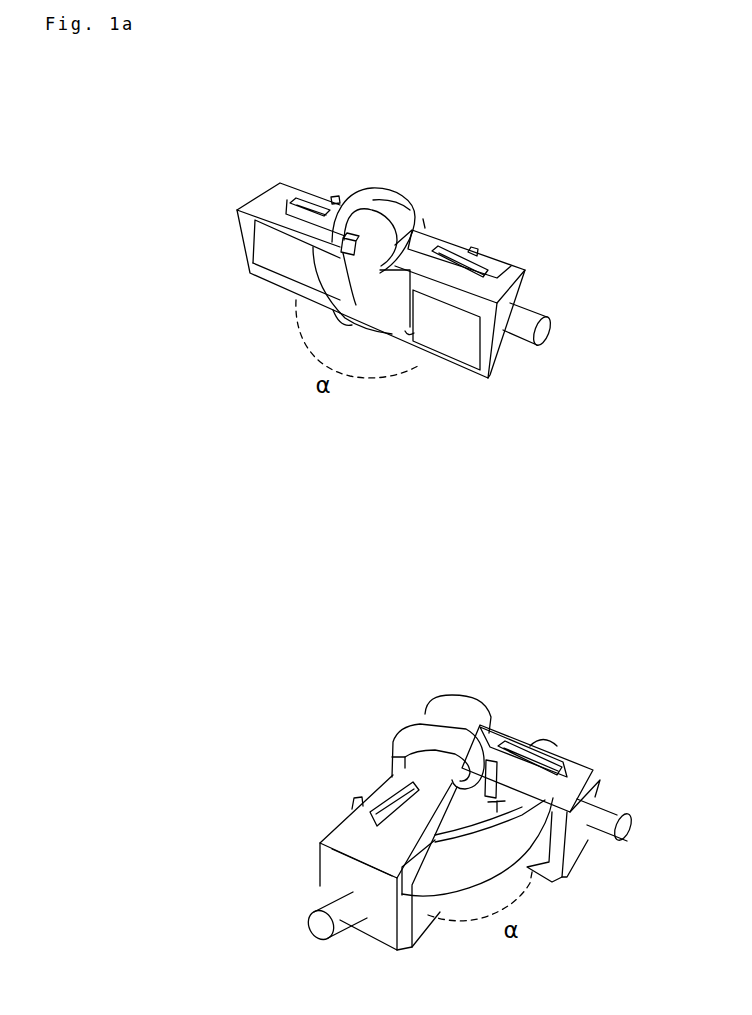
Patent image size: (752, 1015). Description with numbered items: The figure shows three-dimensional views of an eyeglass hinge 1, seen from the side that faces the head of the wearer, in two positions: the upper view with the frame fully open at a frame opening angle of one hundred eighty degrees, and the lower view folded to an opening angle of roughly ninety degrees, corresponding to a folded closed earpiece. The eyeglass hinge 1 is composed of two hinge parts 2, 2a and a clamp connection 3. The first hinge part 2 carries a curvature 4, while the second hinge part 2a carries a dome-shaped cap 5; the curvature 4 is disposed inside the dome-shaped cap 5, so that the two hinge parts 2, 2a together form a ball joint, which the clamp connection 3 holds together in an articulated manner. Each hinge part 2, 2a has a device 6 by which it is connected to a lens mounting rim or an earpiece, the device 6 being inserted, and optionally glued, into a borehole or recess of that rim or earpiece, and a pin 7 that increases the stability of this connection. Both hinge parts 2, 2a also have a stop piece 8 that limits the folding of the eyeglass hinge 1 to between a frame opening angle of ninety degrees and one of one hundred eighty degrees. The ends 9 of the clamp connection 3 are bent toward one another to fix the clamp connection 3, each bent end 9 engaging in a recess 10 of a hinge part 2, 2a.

In FIG. 1A, the eyeglass hinge 1 is at (158, 141).
In FIG. 1B, the eyeglass hinge 1 is at (235, 674).
In FIG. 1A, the hinge part 2 is at (447, 337).
In FIG. 1B, the hinge part 2 is at (560, 880).
In FIG. 1A, the hinge part 2a is at (290, 270).
In FIG. 1B, the hinge part 2a is at (412, 917).
In FIG. 1A, the clamp connection 3 is at (333, 277).
In FIG. 1B, the clamp connection 3 is at (447, 870).
In FIG. 1A, the curvature 4 is at (400, 213).
In FIG. 1B, the curvature 4 is at (457, 700).
In FIG. 1A, the dome-shaped cap 5 is at (370, 200).
In FIG. 1B, the dome-shaped cap 5 is at (430, 730).
In FIG. 1A, the device 6 is at (325, 200).
In FIG. 1B, the device 6 is at (413, 787).
In FIG. 1A, the pin 7 is at (523, 322).
In FIG. 1B, the pin 7 is at (325, 905).
In FIG. 1A, the stop piece 8 is at (410, 323).
In FIG. 1B, the stop piece 8 is at (490, 752).
In FIG. 1A, the ends of clamp connection 9 is at (334, 197).
In FIG. 1B, the ends of clamp connection 9 is at (352, 803).
In FIG. 1A, the recess 10 is at (263, 248).